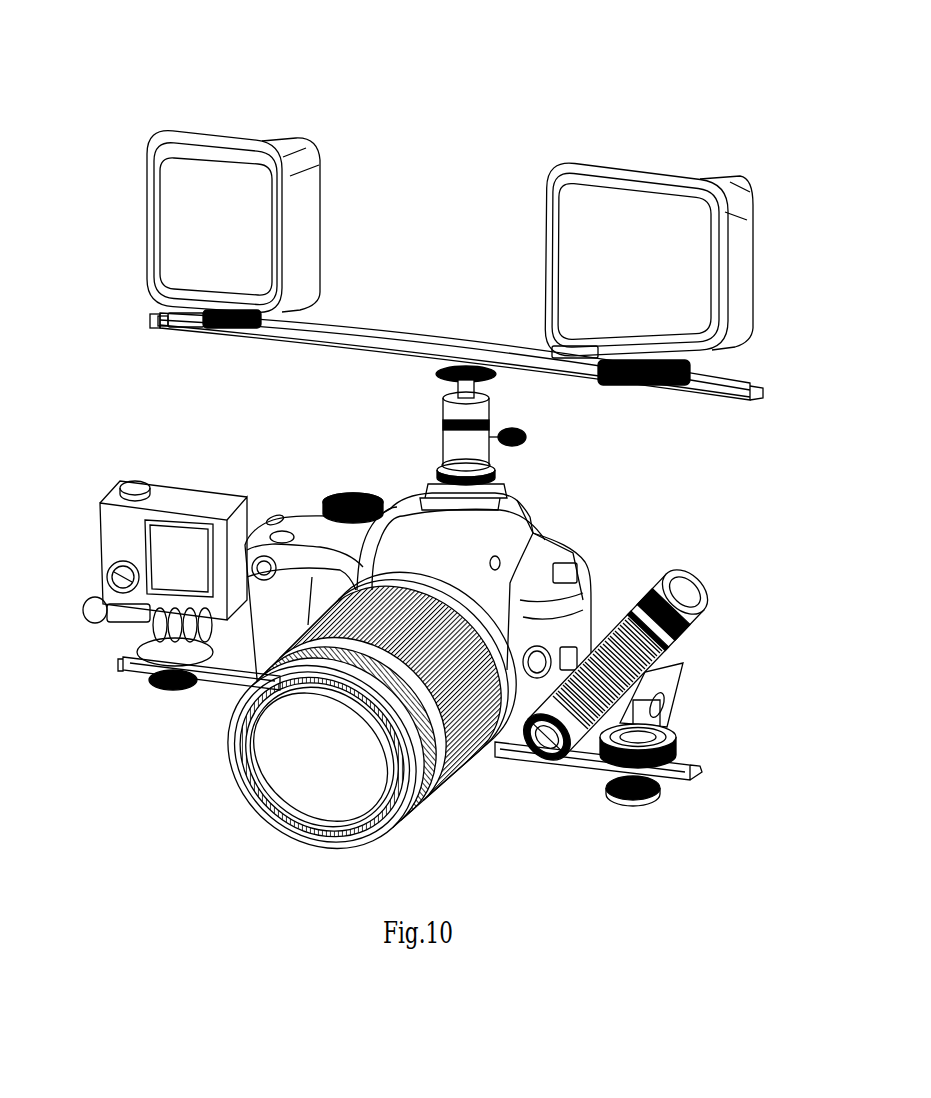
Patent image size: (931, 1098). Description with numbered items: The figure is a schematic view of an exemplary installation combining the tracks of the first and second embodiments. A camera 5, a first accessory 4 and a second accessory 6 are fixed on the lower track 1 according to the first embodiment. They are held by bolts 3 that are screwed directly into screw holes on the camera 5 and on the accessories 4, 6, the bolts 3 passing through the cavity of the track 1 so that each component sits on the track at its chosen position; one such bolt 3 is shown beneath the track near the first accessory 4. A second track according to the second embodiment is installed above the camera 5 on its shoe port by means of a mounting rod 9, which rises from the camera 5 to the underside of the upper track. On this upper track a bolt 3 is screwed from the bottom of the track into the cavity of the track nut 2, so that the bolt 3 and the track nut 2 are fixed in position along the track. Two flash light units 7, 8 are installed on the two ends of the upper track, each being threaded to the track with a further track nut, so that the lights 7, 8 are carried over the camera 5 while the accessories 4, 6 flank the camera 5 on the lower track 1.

The track 1 is at (660, 776).
The track nut 2 is at (463, 343).
The bolt 3 is at (637, 797).
The first accessory 4 is at (700, 585).
The camera 5 is at (533, 560).
The second accessory 6 is at (160, 490).
The flash light unit 7 is at (203, 131).
The flash light unit 8 is at (695, 215).
The mounting rod 9 is at (455, 450).